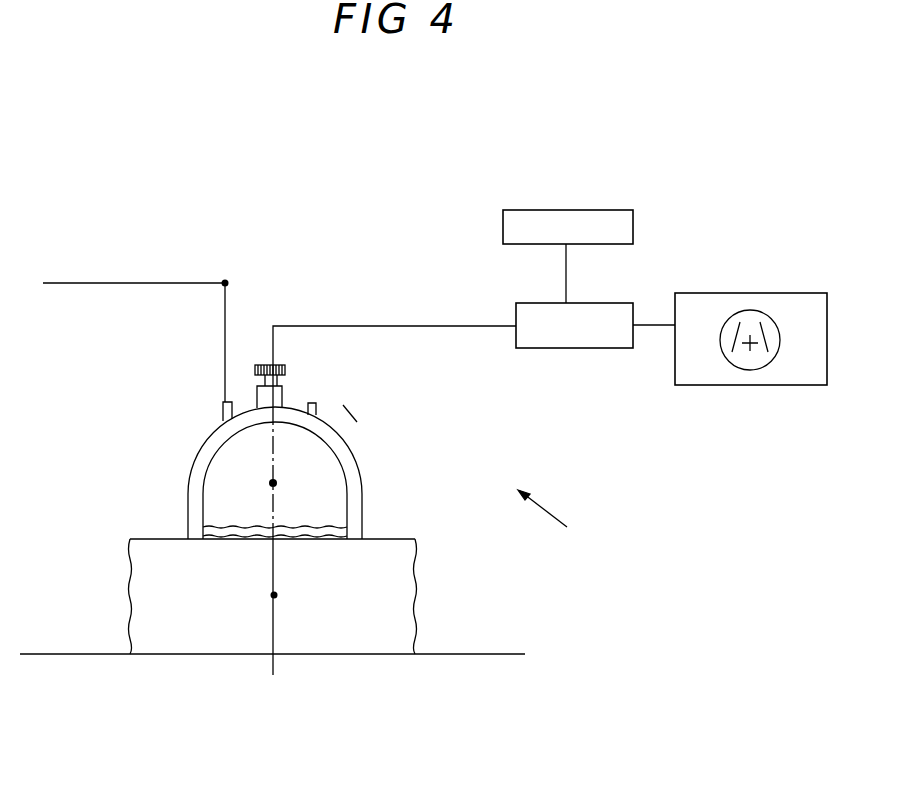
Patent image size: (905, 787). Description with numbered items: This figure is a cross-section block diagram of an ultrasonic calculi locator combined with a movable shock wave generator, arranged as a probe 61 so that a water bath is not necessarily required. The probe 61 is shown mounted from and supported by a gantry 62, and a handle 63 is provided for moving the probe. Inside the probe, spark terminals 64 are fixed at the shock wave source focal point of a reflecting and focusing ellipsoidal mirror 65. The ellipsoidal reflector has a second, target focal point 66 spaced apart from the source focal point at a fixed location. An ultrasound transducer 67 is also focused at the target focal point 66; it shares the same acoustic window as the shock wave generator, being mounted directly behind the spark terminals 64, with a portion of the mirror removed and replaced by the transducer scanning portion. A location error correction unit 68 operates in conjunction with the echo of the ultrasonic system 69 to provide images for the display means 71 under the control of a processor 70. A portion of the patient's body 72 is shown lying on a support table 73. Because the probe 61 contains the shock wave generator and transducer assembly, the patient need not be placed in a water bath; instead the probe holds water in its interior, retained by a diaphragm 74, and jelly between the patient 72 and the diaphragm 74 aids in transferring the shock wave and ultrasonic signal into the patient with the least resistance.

The probe 61 is at (354, 453).
The gantry 62 is at (124, 282).
The handle 63 is at (337, 430).
The spark terminals 64 is at (276, 482).
The ellipsoidal mirror 65 is at (347, 468).
The target focal point 66 is at (277, 594).
The ultrasound transducer 67 is at (283, 396).
The location error correction unit 68 is at (557, 209).
The echo of the ultrasonic system 69 is at (558, 520).
The processor 70 is at (605, 351).
The display means 71 is at (750, 293).
The patient's body 72 is at (409, 574).
The support table 73 is at (449, 651).
The diaphragm 74 is at (312, 535).